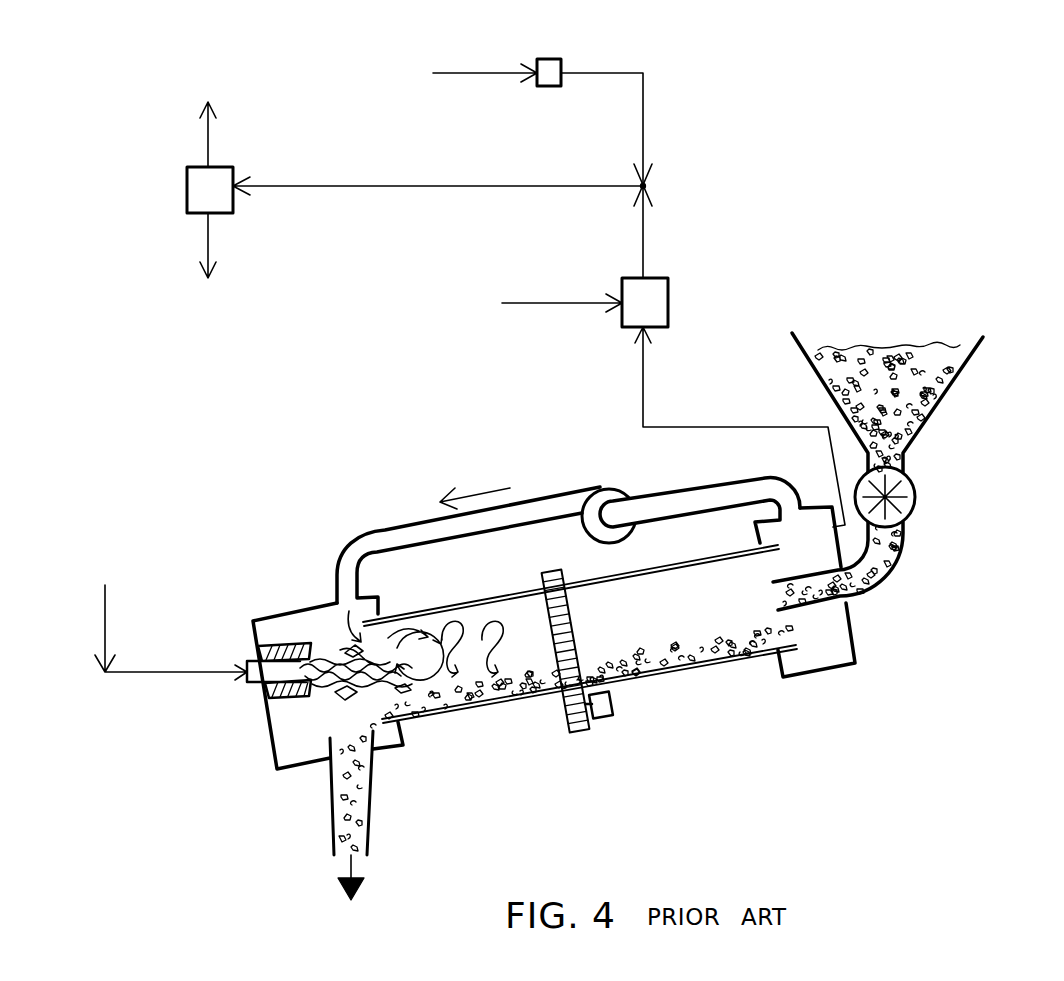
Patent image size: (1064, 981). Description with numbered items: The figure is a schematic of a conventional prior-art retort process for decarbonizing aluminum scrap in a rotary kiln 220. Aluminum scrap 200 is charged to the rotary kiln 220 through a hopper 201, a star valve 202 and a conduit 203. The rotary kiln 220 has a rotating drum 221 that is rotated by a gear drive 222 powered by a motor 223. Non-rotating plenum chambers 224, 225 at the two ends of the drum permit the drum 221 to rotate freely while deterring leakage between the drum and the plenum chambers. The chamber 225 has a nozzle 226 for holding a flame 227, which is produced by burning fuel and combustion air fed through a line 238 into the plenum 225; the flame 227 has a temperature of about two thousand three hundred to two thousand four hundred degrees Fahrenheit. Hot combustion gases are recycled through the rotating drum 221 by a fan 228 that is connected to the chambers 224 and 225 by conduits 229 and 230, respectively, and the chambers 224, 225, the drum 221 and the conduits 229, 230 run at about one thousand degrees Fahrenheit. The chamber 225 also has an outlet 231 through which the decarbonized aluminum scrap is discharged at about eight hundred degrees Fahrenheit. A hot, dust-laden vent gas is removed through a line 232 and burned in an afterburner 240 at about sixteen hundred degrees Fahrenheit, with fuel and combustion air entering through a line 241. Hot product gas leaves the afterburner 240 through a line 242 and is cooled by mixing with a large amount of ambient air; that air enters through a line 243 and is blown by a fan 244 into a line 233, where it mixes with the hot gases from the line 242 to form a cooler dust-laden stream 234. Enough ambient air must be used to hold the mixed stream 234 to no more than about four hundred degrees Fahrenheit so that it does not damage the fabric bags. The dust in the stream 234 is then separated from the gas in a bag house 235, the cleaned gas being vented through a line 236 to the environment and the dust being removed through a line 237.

The aluminum scrap 200 is at (867, 347).
The hopper 201 is at (937, 397).
The star valve 202 is at (918, 492).
The conduit 203 is at (893, 575).
The rotary kiln 220 is at (805, 807).
The rotating drum 221 is at (425, 714).
The gear drive 222 is at (575, 735).
The motor 223 is at (607, 718).
The plenum chamber 224 is at (820, 678).
The plenum chamber 225 is at (277, 760).
The nozzle 226 is at (290, 700).
The flame 227 is at (322, 675).
The fan 228 is at (612, 489).
The conduit 229 is at (745, 484).
The conduit 230 is at (385, 532).
The outlet 231 is at (337, 830).
The line 232 is at (643, 398).
The line 233 is at (644, 126).
The dust laden stream 234 is at (373, 187).
The bag house 235 is at (187, 197).
The line 236 is at (210, 145).
The line 237 is at (207, 247).
The line 238 is at (105, 618).
The afterburner 240 is at (669, 301).
The line 241 is at (543, 303).
The line 242 is at (646, 222).
The line 243 is at (492, 73).
The fan 244 is at (563, 86).